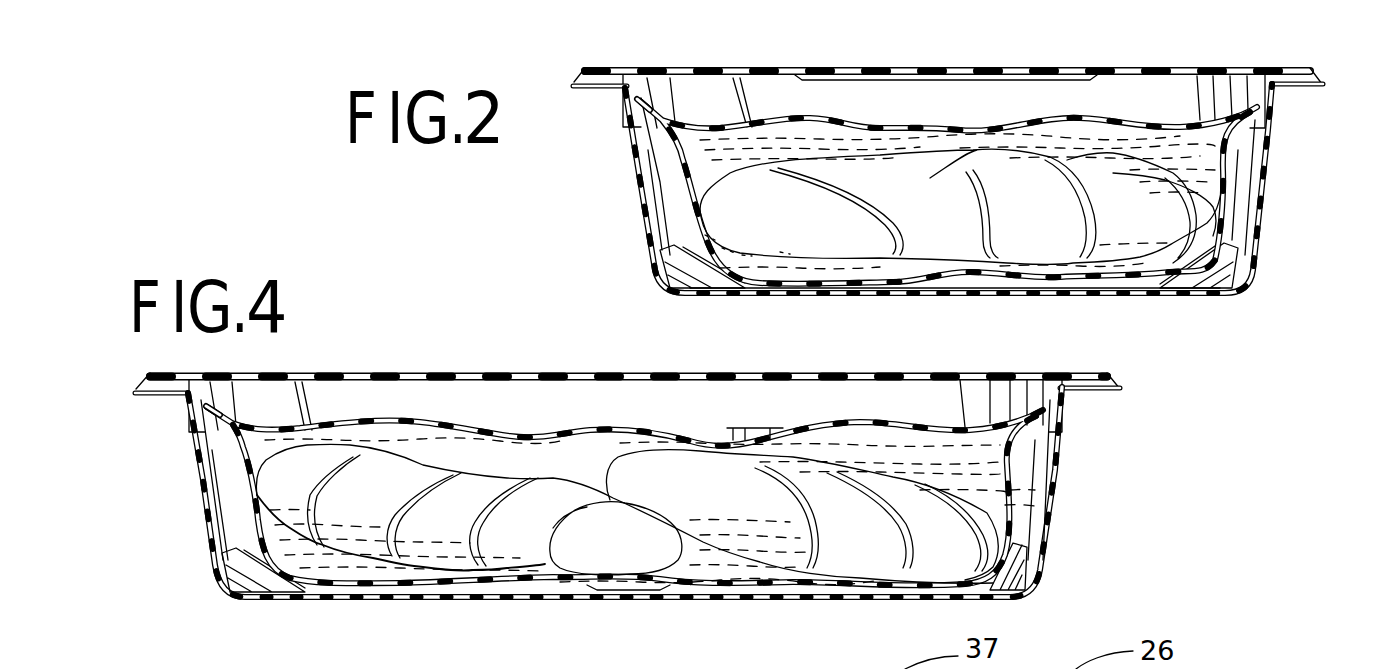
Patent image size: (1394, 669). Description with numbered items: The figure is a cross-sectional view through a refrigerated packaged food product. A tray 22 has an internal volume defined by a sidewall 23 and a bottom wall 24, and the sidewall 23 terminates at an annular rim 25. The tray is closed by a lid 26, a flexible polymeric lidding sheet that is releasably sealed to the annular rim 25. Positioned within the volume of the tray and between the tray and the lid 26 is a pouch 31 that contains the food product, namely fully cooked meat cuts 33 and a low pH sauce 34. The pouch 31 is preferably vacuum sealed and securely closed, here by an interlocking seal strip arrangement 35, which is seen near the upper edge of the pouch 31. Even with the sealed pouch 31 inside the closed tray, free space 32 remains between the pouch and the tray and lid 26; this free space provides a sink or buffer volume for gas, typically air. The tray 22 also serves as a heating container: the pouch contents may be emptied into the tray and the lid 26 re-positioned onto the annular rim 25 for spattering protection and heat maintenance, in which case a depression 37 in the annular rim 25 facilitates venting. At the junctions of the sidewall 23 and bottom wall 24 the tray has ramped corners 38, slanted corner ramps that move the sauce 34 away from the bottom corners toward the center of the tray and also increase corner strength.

In FIG. 2, the tray 22 is at (1262, 231).
In FIG. 4, the tray 22 is at (1055, 533).
In FIG. 2, the sidewall 23 is at (654, 188).
In FIG. 4, the sidewall 23 is at (210, 486).
In FIG. 2, the bottom wall 24 is at (1161, 294).
In FIG. 2, the annular rim 25 is at (1308, 86).
In FIG. 4, the annular rim 25 is at (1117, 387).
In FIG. 2, the lid 26 is at (1150, 72).
In FIG. 4, the lid 26 is at (788, 374).
In FIG. 2, the pouch 31 is at (881, 127).
In FIG. 4, the pouch 31 is at (455, 427).
In FIG. 2, the free space 32 is at (667, 221).
In FIG. 4, the free space 32 is at (726, 414).
In FIG. 2, the fully cooked meat cuts 33 is at (949, 220).
In FIG. 4, the fully cooked meat cuts 33 is at (529, 537).
In FIG. 2, the low pH sauce 34 is at (1204, 157).
In FIG. 4, the low pH sauce 34 is at (718, 557).
In FIG. 2, the interlocking seal strip arrangement 35 is at (645, 108).
In FIG. 4, the interlocking seal strip arrangement 35 is at (218, 413).
In FIG. 2, the depression 37 is at (892, 73).
In FIG. 2, the ramped corners 38 is at (678, 270).
In FIG. 4, the ramped corners 38 is at (247, 578).